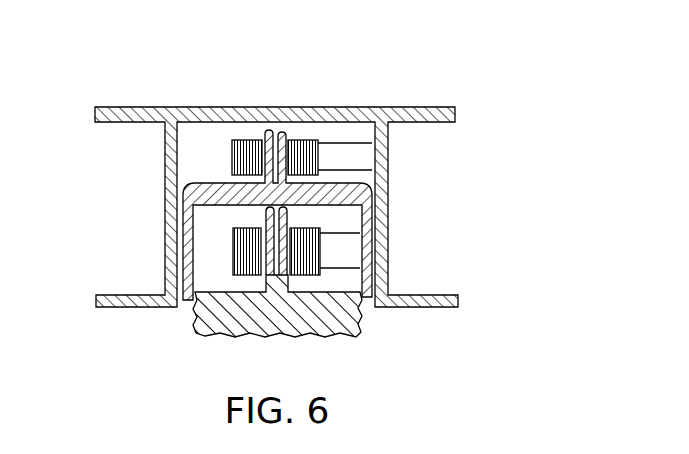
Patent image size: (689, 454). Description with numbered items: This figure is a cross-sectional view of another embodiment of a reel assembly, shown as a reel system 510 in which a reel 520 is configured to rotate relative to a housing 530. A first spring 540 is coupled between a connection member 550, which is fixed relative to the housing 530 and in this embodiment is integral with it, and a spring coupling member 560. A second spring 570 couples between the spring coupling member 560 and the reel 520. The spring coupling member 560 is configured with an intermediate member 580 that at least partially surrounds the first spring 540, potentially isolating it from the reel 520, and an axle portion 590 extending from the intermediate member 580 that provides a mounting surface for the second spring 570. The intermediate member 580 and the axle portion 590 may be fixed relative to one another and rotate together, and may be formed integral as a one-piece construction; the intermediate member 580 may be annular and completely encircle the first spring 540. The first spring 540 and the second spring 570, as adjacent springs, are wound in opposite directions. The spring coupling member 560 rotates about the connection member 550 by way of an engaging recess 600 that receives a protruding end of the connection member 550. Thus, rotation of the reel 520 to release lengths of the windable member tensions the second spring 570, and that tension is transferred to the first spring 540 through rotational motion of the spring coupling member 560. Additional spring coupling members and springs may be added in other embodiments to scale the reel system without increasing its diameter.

The reel system 510 is at (449, 78).
The reel 520 is at (147, 107).
The housing 530 is at (315, 313).
The first spring 540 is at (240, 258).
The connection member 550 is at (265, 212).
The spring coupling member 560 is at (173, 198).
The second spring 570 is at (250, 152).
The intermediate member 580 is at (186, 244).
The axle portion 590 is at (278, 137).
The engaging recess 600 is at (290, 214).